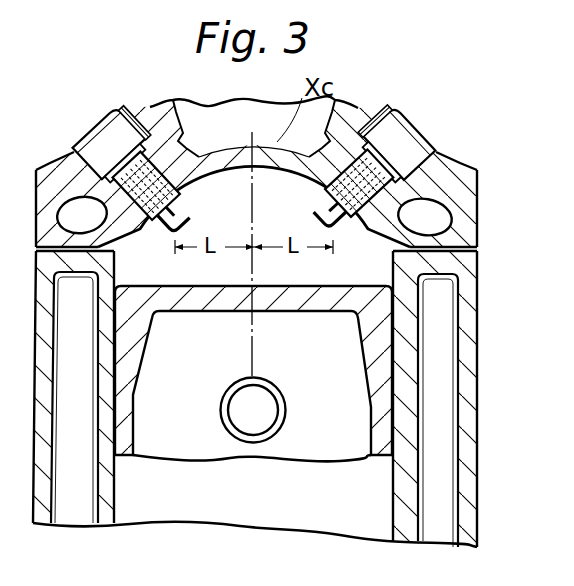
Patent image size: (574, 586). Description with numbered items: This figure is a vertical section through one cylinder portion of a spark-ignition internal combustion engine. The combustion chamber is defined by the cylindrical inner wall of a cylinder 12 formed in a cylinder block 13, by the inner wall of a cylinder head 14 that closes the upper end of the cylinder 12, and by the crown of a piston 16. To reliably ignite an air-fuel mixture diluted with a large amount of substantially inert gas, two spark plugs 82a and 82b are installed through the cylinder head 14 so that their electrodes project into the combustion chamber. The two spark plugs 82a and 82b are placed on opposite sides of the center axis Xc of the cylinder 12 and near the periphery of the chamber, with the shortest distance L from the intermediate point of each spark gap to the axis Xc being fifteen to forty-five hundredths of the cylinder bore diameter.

The spark plug 82a is at (176, 112).
The spark plug 82b is at (400, 138).
The cylinder head 14 is at (474, 211).
The cylinder block 13 is at (475, 413).
The cylinder 12 is at (391, 269).
The piston 16 is at (379, 407).